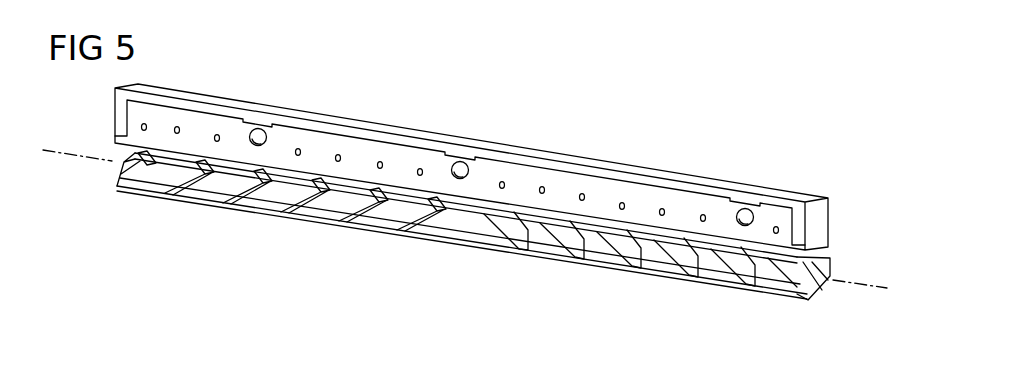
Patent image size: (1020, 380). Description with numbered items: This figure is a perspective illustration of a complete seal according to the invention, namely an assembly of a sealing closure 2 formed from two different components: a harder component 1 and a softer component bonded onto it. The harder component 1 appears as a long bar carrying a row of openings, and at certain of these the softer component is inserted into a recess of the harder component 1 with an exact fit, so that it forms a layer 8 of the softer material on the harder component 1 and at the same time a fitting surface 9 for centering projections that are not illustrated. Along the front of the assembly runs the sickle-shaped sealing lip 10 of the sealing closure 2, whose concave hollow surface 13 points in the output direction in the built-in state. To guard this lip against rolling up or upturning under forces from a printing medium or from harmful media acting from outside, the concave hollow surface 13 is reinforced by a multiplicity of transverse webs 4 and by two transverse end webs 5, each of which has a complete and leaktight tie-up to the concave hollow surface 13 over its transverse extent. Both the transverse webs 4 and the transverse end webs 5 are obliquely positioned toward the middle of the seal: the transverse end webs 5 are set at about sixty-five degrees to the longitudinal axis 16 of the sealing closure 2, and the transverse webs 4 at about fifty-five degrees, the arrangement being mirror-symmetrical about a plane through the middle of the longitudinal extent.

The harder component 1 is at (633, 176).
The sealing closure 2 is at (528, 176).
The transverse webs 4 is at (424, 218).
The transverse end webs 5 is at (116, 172).
The layer 8 is at (257, 128).
The fitting surface 9 is at (460, 161).
The sickle-shaped sealing lip 10 is at (767, 279).
The concave hollow surface 13 is at (335, 209).
The longitudinal axis 16 is at (848, 280).